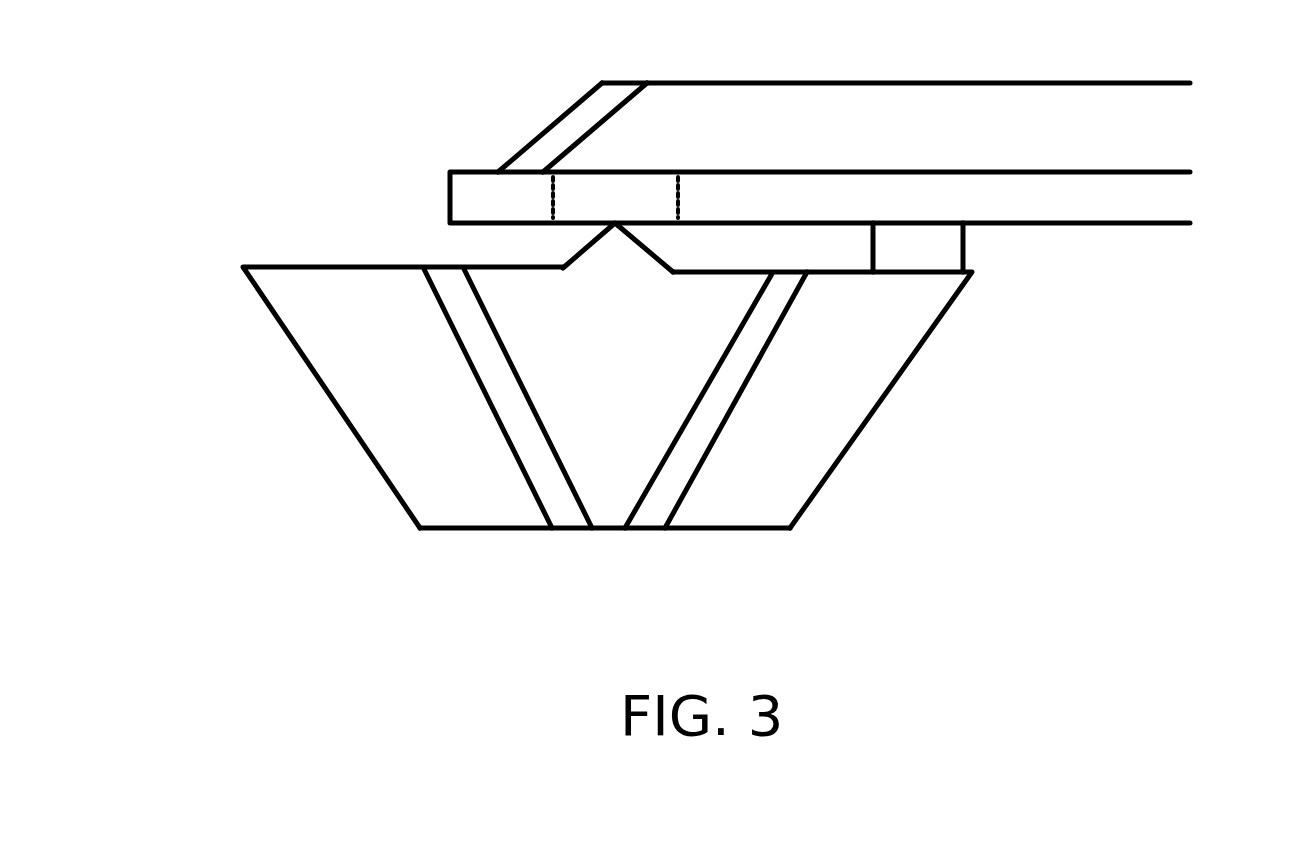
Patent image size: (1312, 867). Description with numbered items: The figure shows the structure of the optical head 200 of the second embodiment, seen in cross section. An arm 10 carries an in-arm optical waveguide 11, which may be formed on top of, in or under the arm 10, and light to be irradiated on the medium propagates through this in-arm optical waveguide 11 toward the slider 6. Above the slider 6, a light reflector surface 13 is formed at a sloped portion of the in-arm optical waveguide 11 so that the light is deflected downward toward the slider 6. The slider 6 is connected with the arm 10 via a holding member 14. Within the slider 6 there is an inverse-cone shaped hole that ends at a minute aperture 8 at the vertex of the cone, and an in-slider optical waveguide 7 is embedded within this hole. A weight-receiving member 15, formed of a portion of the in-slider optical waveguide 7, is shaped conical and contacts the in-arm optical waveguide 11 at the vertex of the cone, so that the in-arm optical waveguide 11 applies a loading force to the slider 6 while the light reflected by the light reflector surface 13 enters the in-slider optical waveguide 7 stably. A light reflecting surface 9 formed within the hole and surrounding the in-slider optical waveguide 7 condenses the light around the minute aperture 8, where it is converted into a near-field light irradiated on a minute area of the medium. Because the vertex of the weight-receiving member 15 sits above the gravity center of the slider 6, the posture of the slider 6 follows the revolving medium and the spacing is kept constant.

The optical head 200 is at (280, 145).
The slider 6 is at (412, 427).
The in-slider optical waveguide 7 is at (622, 363).
The minute aperture 8 is at (610, 528).
The light reflecting surface 9 is at (683, 458).
The arm 10 is at (1112, 198).
The in-arm optical waveguide 11 is at (1057, 103).
The light reflector surface 13 is at (552, 142).
The holding member 14 is at (994, 270).
The weight-receiving member 15 is at (612, 243).